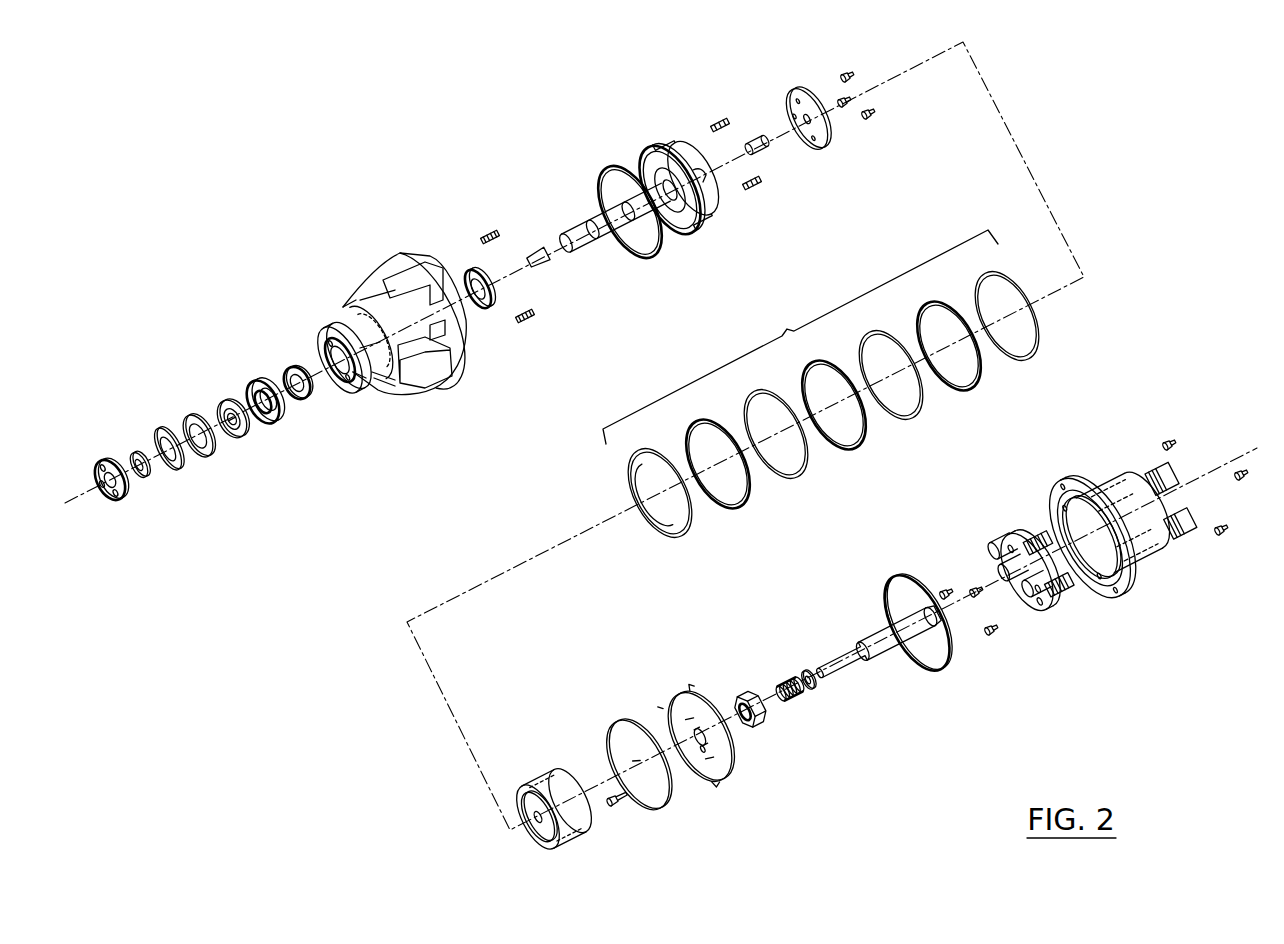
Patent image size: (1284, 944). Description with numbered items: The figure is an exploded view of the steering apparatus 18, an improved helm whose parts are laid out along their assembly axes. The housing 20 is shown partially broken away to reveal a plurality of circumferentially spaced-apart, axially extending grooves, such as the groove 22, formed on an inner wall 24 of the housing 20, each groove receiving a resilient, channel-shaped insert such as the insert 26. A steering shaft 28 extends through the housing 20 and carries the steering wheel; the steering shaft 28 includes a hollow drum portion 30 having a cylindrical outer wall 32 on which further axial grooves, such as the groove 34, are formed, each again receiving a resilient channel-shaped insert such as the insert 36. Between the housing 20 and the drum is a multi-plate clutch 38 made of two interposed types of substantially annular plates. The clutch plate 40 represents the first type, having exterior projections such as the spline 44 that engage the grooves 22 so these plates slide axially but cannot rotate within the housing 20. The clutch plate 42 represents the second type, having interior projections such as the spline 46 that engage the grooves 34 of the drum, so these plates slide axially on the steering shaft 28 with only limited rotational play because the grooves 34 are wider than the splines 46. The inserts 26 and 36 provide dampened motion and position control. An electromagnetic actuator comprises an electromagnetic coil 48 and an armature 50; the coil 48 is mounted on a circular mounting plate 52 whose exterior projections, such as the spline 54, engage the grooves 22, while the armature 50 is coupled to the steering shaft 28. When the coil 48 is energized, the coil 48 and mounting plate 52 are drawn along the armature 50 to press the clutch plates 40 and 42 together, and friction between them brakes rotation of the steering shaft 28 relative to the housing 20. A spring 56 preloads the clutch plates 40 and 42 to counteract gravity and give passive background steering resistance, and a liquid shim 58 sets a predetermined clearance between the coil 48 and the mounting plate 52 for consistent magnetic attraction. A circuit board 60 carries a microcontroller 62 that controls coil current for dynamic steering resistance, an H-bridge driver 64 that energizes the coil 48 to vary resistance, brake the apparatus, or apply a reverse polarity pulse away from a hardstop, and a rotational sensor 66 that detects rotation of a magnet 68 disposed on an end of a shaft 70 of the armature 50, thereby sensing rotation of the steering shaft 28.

The steering apparatus 18 is at (292, 172).
The housing 20 is at (367, 288).
The groove 22 is at (412, 362).
The inner wall 24 is at (398, 392).
The insert 26 is at (533, 319).
The steering shaft 28 is at (575, 225).
The hollow drum portion 30 is at (667, 145).
The cylindrical outer wall 32 is at (690, 158).
The groove 34 is at (706, 176).
The insert 36 is at (760, 136).
The multi-plate clutch 38 is at (827, 345).
The clutch plate 40 is at (745, 503).
The clutch plate 42 is at (684, 528).
The spline 44 is at (722, 506).
The spline 46 is at (640, 475).
The electromagnetic coil 48 is at (545, 782).
The armature 50 is at (862, 652).
The circular mounting plate 52 is at (718, 752).
The spline 54 is at (704, 787).
The spring 56 is at (795, 700).
The shim 58 is at (650, 800).
The circuit board 60 is at (1046, 602).
The microcontroller 62 is at (1002, 566).
The H-bridge driver 64 is at (1030, 540).
The rotational sensor 66 is at (1000, 546).
The magnet 68 is at (948, 646).
The shaft 70 is at (879, 597).